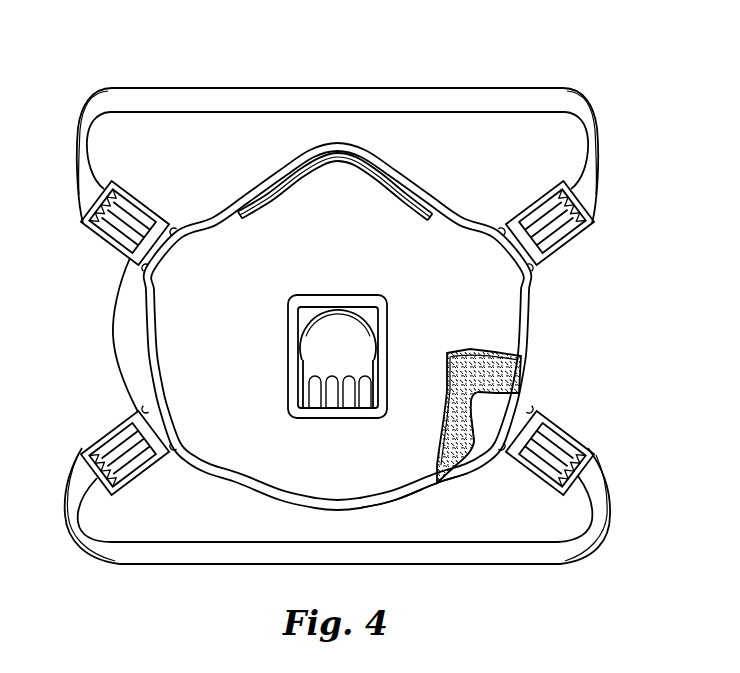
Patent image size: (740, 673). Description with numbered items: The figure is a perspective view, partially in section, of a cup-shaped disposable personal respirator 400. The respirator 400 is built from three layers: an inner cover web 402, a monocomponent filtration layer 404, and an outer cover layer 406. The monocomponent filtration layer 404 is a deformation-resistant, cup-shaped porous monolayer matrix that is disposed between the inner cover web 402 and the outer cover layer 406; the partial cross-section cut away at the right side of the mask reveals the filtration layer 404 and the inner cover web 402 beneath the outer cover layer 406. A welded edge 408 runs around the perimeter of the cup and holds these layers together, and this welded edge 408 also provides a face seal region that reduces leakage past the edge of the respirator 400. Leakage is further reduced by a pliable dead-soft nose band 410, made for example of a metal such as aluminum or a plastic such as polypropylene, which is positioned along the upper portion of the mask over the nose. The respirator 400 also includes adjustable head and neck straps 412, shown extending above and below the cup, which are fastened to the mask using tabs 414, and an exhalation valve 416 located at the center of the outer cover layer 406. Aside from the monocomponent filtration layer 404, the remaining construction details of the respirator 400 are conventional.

The disposable personal respirator 400 is at (544, 69).
The inner cover web 402 is at (481, 413).
The monocomponent filtration layer 404 is at (516, 371).
The outer cover layer 406 is at (257, 463).
The welded edge 408 is at (422, 495).
The nose band 410 is at (418, 209).
The head and neck straps 412 is at (195, 96).
The tabs 414 is at (113, 329).
The exhalation valve 416 is at (366, 357).